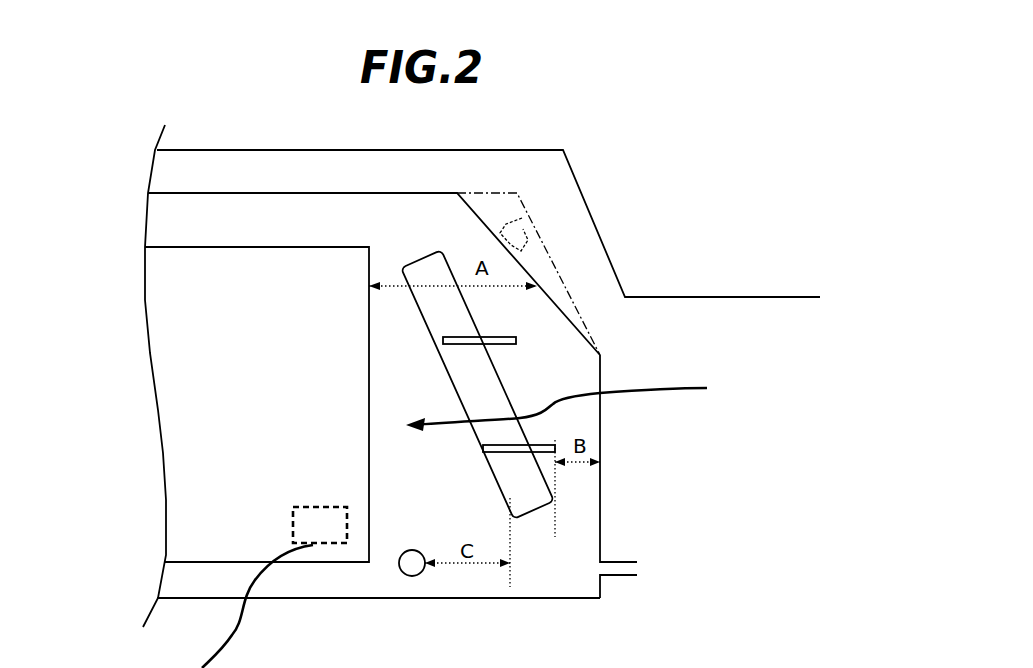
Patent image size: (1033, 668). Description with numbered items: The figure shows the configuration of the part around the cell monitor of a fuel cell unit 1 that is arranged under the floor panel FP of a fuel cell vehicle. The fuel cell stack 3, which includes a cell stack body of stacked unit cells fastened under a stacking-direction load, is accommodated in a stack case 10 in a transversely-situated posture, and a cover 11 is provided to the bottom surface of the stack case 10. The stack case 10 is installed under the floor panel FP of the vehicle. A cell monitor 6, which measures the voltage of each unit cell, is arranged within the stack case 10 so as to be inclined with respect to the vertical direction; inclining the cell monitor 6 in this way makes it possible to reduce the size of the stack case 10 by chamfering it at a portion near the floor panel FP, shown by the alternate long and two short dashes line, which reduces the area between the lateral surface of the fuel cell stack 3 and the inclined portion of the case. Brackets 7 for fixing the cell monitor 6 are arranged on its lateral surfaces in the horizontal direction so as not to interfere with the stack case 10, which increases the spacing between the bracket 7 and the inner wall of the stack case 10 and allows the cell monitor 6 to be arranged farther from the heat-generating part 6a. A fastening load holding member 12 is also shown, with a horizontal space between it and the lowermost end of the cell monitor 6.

The fuel cell unit 1 is at (95, 205).
The floor panel FP is at (248, 150).
The fuel cell stack 3 is at (245, 537).
The fastening load holding member 12 is at (402, 571).
The cell monitor 6 is at (524, 487).
The heat-generating part 6a is at (577, 405).
The bracket 7 is at (505, 346).
The stack case 10 is at (603, 527).
The cover 11 is at (603, 585).